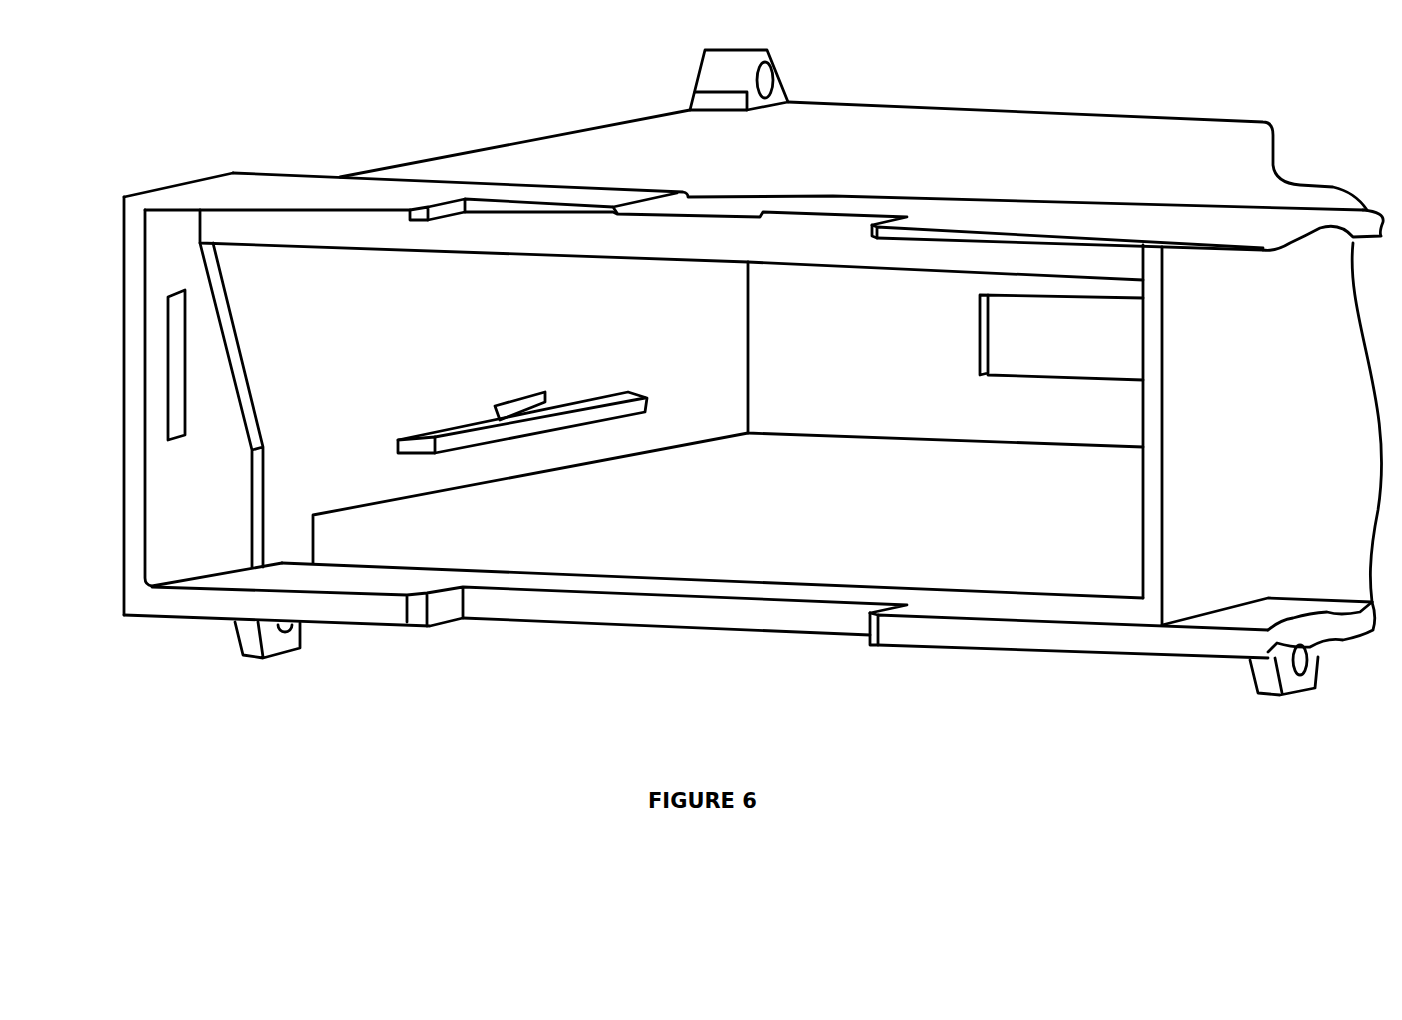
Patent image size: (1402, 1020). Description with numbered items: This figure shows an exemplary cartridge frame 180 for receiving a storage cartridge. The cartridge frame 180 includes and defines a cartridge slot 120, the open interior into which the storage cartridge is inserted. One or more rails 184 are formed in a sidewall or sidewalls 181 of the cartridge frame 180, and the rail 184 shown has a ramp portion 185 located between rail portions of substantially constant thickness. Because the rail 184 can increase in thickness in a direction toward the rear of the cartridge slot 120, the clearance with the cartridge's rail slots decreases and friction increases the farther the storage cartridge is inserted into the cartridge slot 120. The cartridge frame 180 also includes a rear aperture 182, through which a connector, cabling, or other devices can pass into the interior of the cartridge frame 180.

The cartridge slot 120 is at (117, 238).
The cartridge frame 180 is at (973, 646).
The sidewall 181 is at (283, 540).
The rear aperture 182 is at (1090, 341).
The rail 184 is at (598, 392).
The ramp portion 185 is at (518, 399).